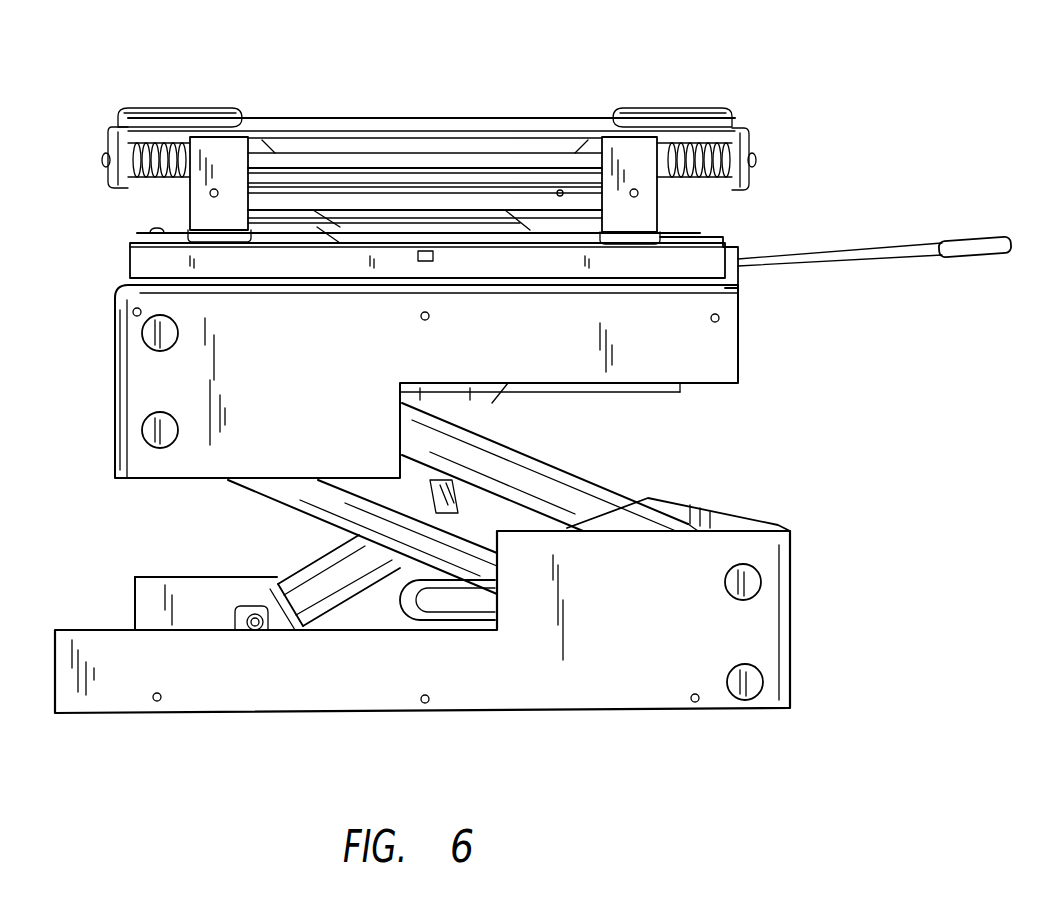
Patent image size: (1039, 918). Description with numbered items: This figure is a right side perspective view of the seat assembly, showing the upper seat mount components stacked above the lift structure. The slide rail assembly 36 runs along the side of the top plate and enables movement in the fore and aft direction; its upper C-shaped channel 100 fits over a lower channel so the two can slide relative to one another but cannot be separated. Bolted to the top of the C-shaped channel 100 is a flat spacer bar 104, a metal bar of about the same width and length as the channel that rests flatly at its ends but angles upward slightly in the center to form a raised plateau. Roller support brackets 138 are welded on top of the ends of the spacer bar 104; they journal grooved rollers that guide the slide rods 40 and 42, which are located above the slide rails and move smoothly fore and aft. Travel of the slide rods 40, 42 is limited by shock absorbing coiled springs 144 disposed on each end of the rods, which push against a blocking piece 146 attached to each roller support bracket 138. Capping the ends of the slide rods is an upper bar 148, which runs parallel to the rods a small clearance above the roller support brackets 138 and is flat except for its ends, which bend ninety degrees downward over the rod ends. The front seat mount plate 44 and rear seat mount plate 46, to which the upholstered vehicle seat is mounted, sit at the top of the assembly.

The slide rail assembly 36 is at (120, 242).
The slide rod 40 is at (357, 163).
The slide rod 42 is at (387, 213).
The front seat mount plate 44 is at (645, 108).
The rear seat mount plate 46 is at (210, 108).
The upper C-shaped channel 100 is at (137, 243).
The spacer bar 104 is at (725, 238).
The roller support bracket 138 is at (228, 150).
The shock absorbing coiled spring 144 is at (125, 117).
The blocking piece 146 is at (185, 143).
The upper bar 148 is at (338, 120).